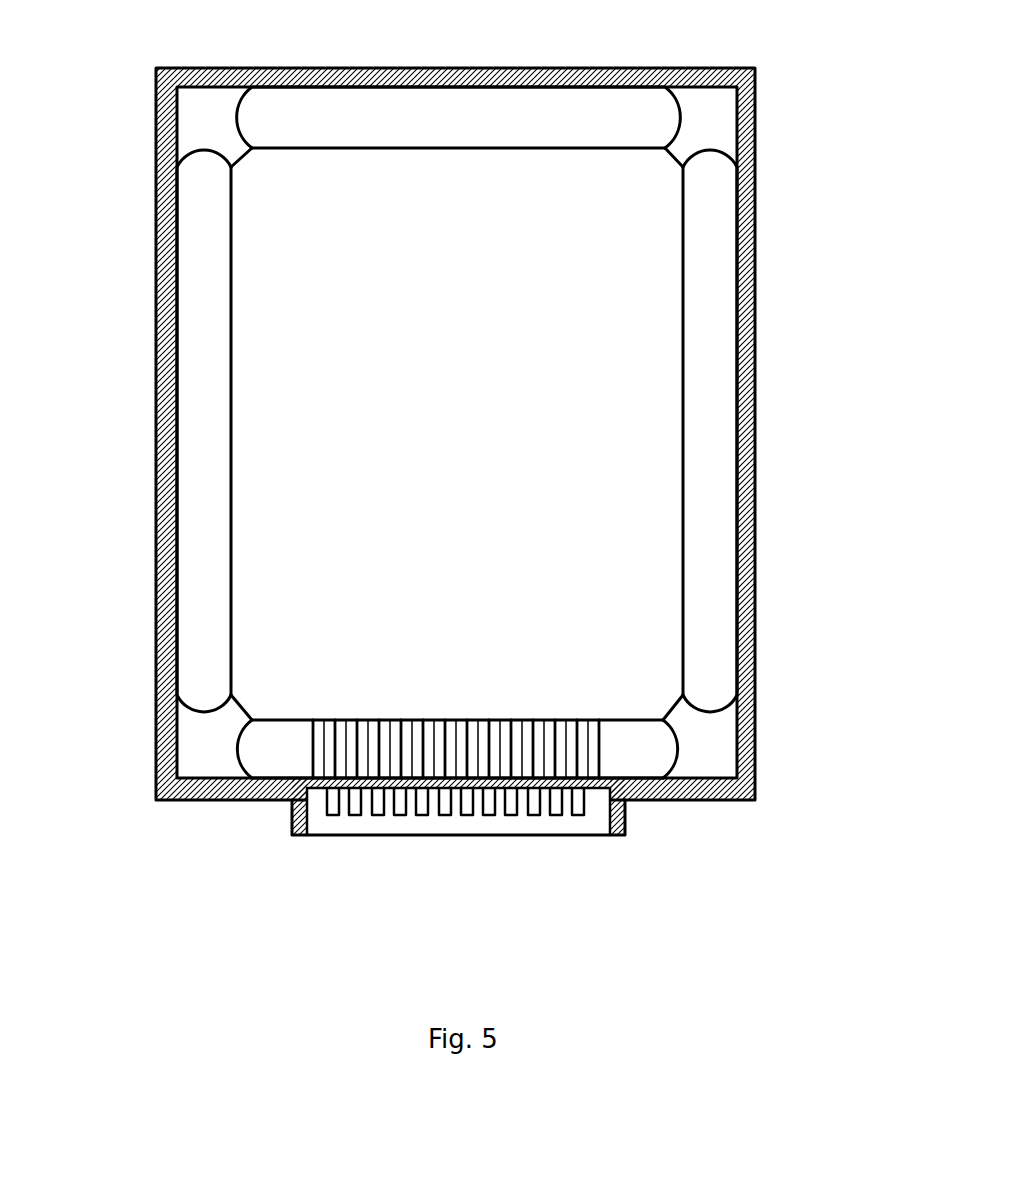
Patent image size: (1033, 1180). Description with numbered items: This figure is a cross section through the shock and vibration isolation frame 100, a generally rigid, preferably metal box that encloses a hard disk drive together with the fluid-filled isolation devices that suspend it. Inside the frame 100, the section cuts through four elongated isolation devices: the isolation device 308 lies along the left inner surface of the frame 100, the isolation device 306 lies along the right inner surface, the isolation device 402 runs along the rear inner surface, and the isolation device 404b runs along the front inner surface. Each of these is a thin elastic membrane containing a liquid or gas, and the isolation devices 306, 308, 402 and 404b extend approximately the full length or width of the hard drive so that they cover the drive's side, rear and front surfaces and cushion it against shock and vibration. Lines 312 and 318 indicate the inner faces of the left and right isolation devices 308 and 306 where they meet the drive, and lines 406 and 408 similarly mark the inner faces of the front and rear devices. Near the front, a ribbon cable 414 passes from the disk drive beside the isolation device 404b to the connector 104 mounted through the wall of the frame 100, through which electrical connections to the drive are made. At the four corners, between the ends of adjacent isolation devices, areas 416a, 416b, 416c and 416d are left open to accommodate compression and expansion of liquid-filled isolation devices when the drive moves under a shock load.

The shock and vibration isolation frame 100 is at (757, 215).
The connector 104 is at (627, 833).
The isolation device 306 is at (710, 478).
The isolation device 308 is at (205, 477).
The inner wall of left conduit 312 is at (228, 372).
The inner wall of right conduit 318 is at (684, 358).
The isolation device 402 is at (612, 118).
The isolation device 404b is at (640, 755).
The bottom conduit 406 is at (272, 720).
The bottom surface of top conduit 408 is at (538, 147).
The ribbon cable 414 is at (470, 735).
The area 416a is at (202, 110).
The area 416b is at (203, 752).
The area 416c is at (710, 110).
The area 416d is at (708, 743).